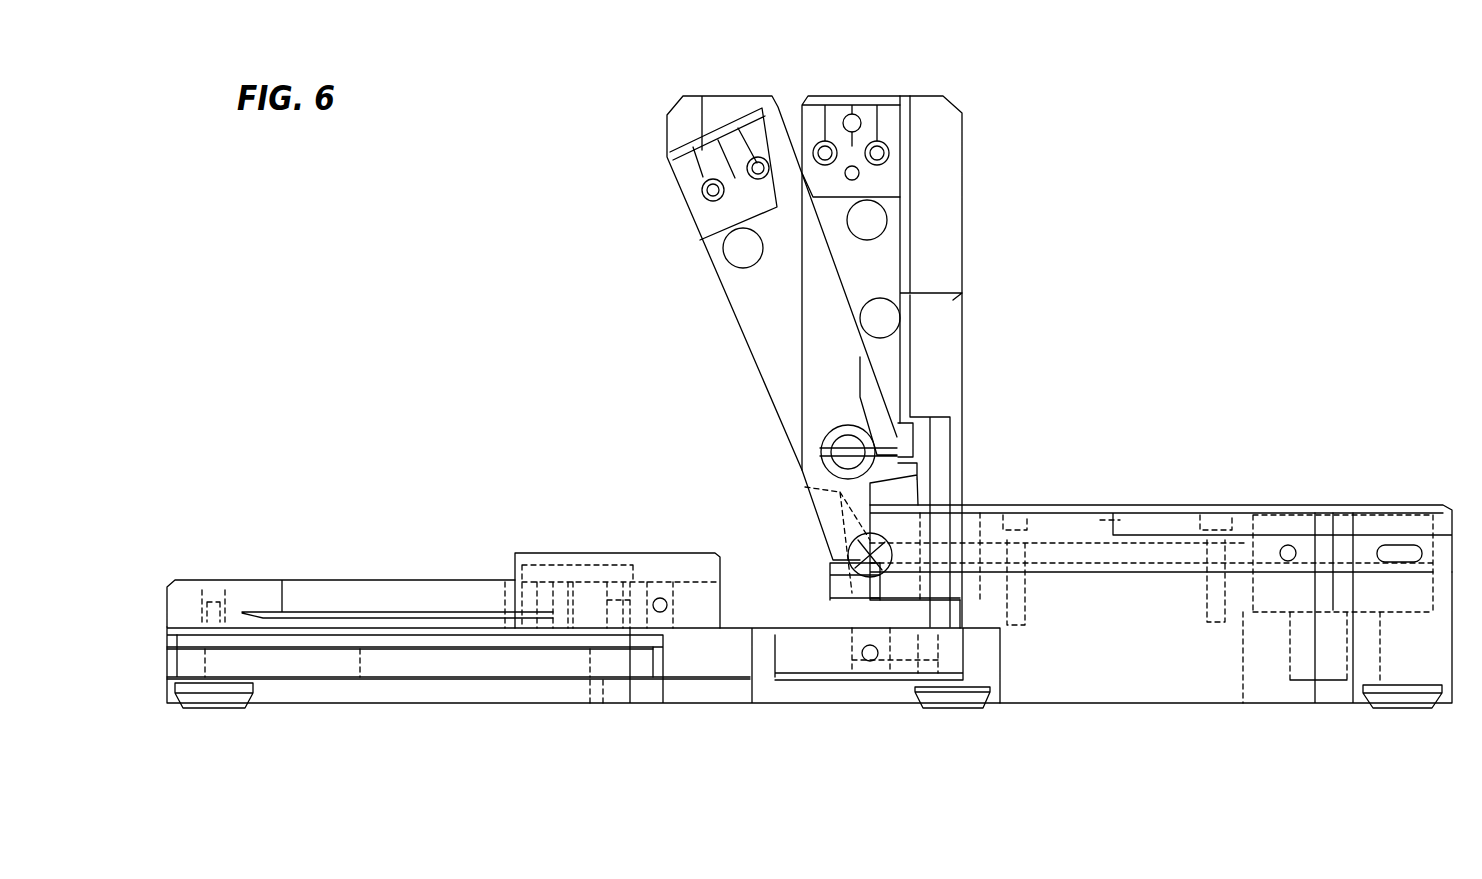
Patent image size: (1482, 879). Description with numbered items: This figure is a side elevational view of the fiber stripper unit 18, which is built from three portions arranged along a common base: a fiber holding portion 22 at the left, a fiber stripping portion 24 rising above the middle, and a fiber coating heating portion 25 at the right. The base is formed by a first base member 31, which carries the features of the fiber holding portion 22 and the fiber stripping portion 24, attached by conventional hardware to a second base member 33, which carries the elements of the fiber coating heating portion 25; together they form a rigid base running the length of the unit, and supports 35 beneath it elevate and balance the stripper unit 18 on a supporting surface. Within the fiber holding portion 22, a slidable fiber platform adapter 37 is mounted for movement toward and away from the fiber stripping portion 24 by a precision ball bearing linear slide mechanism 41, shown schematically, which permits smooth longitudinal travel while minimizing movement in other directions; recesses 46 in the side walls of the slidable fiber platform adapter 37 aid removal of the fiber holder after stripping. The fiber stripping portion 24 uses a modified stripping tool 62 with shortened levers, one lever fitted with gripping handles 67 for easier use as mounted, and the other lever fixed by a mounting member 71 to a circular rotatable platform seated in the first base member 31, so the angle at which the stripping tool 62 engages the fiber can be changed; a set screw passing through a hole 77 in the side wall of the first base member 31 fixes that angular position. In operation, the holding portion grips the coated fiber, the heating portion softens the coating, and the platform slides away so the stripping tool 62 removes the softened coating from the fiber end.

The stripper unit 18 is at (1170, 110).
The fiber holding portion 22 is at (420, 490).
The fiber stripping portion 24 is at (911, 329).
The fiber coating heating portion 25 is at (1093, 460).
The first base member 31 is at (480, 690).
The second base member 33 is at (1118, 670).
The supports 35 is at (205, 710).
The slidable fiber platform adapter 37 is at (560, 548).
The linear slide mechanism 41 is at (395, 665).
The recesses 46 is at (528, 548).
The stripping tool 62 is at (749, 344).
The gripping handles 67 is at (677, 127).
The mounting member 71 is at (945, 235).
The hole 77 is at (865, 665).